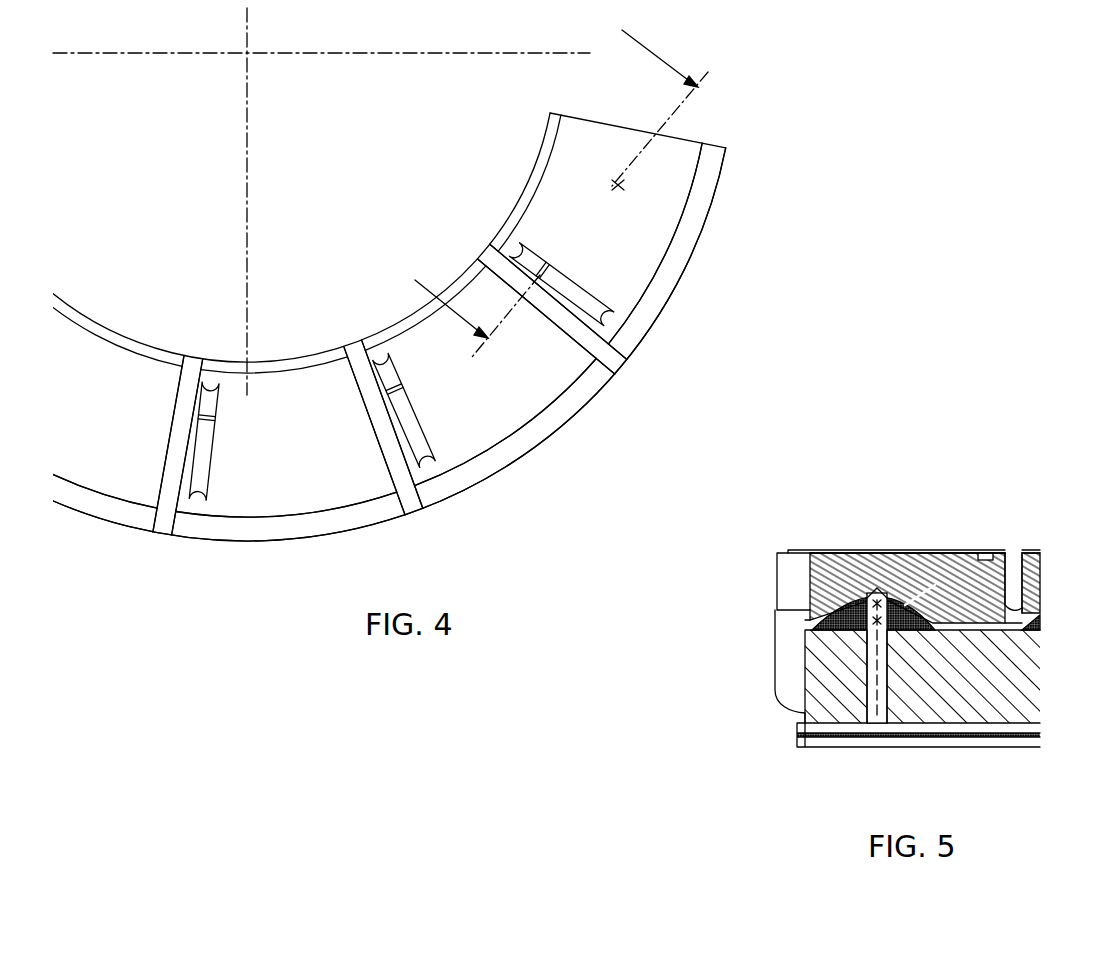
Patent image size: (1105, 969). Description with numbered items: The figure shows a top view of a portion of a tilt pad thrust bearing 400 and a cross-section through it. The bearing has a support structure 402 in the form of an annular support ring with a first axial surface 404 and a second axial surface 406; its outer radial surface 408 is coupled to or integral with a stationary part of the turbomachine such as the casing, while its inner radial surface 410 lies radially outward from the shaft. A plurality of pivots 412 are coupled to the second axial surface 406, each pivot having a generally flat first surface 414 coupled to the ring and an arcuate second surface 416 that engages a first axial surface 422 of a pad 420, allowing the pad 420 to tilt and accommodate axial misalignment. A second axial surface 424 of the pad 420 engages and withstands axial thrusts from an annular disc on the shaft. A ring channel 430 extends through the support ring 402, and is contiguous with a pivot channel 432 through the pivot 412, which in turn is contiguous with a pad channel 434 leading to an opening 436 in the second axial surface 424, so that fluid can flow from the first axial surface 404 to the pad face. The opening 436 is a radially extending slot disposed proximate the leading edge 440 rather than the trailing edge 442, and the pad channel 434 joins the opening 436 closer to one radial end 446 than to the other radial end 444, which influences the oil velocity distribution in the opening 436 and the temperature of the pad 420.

In FIG. 4, the tilt pad thrust bearing 400 is at (390, 317).
In FIG. 5, the tilt pad thrust bearing 400 is at (907, 657).
In FIG. 5, the support structure 402 is at (817, 708).
In FIG. 5, the first axial surface 404 is at (1017, 747).
In FIG. 5, the second axial surface 406 is at (985, 622).
In FIG. 4, the outer radial surface 408 is at (267, 542).
In FIG. 4, the inner radial surface 410 is at (291, 368).
In FIG. 5, the pivot 412 is at (840, 628).
In FIG. 5, the first surface 414 is at (822, 633).
In FIG. 5, the second surface 416 is at (855, 604).
In FIG. 4, the pad 420 is at (633, 287).
In FIG. 5, the pad 420 is at (953, 503).
In FIG. 5, the first axial surface 422 is at (1017, 607).
In FIG. 4, the second axial surface 424 is at (650, 227).
In FIG. 5, the second axial surface 424 is at (847, 552).
In FIG. 5, the ring channel 430 is at (873, 722).
In FIG. 5, the pivot channel 432 is at (862, 633).
In FIG. 4, the pad channel 434 is at (545, 265).
In FIG. 5, the pad channel 434 is at (937, 577).
In FIG. 4, the opening 436 is at (575, 295).
In FIG. 5, the opening 436 is at (987, 553).
In FIG. 4, the leading edge 440 is at (640, 347).
In FIG. 5, the leading edge 440 is at (1005, 550).
In FIG. 4, the trailing edge 442 is at (690, 152).
In FIG. 5, the trailing edge 442 is at (797, 550).
In FIG. 4, the first radial end 444 is at (665, 238).
In FIG. 4, the second radial end 446 is at (541, 197).